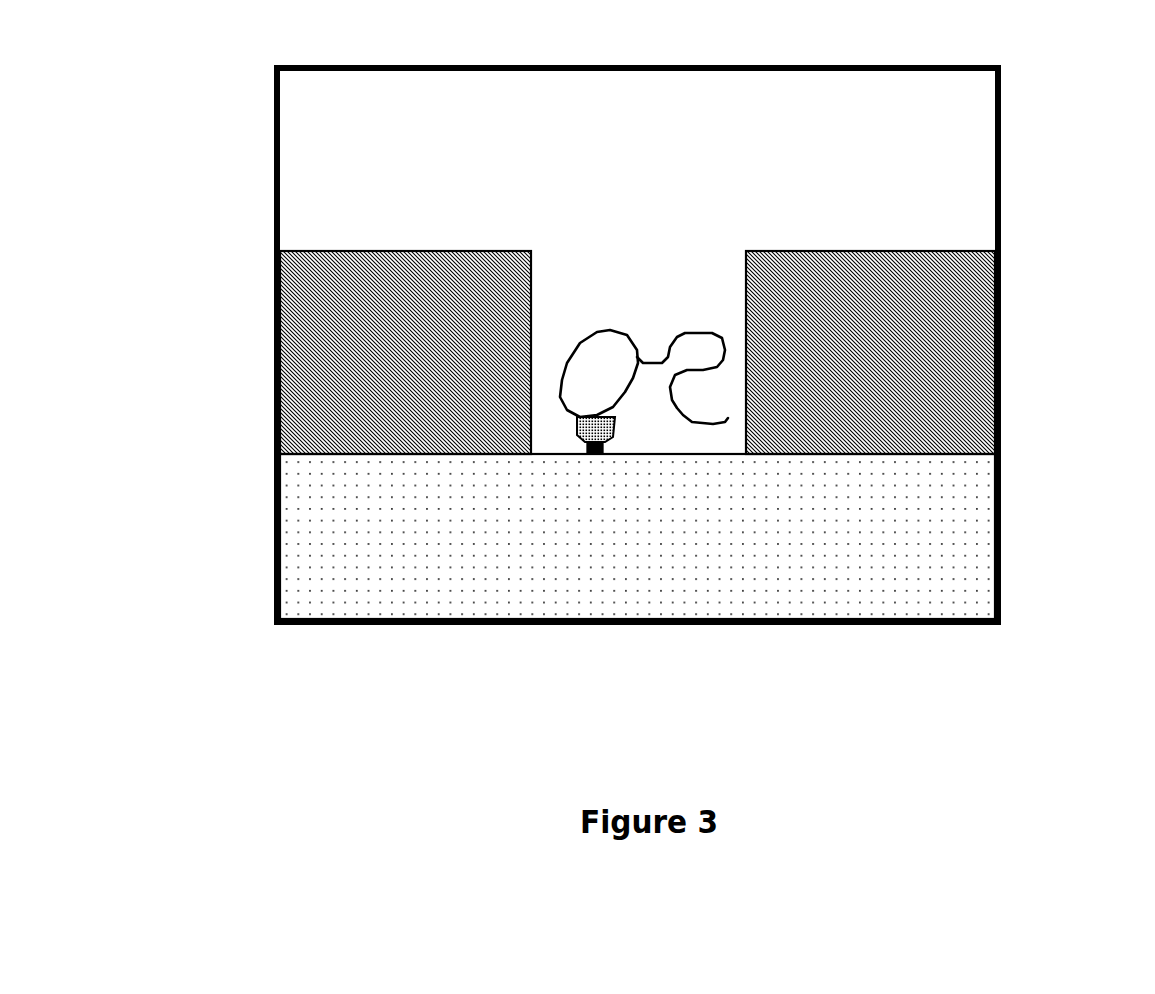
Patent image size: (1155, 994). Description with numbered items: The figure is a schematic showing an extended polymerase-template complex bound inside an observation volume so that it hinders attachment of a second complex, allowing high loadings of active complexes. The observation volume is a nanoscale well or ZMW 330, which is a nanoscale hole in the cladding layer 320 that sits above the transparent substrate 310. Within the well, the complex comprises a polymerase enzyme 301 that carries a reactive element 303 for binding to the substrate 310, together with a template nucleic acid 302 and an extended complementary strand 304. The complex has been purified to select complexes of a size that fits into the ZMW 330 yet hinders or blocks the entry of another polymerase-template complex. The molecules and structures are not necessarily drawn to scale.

The nanoscale well or ZMW 330 is at (570, 255).
The cladding layer 320 is at (925, 390).
The transparent substrate 310 is at (880, 547).
The template nucleic acid 302 is at (615, 323).
The extended complementary strand 304 is at (713, 334).
The reactive element 303 is at (590, 457).
The polymerase enzyme 301 is at (619, 434).